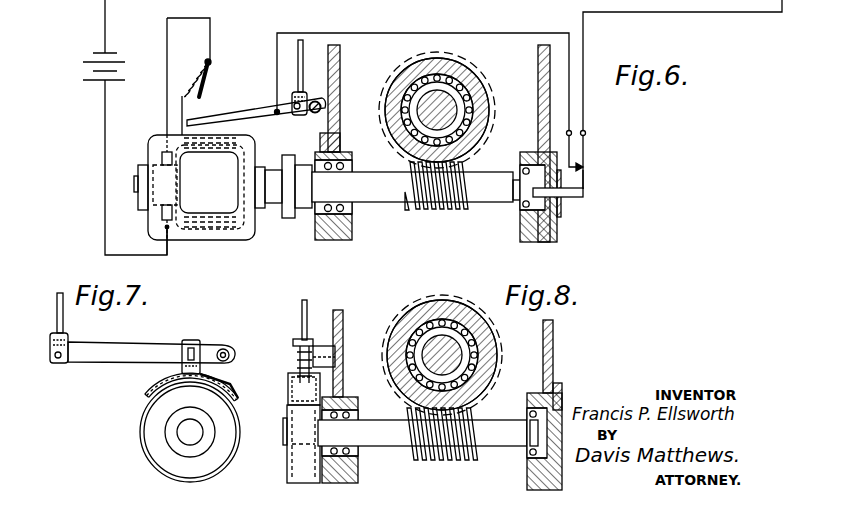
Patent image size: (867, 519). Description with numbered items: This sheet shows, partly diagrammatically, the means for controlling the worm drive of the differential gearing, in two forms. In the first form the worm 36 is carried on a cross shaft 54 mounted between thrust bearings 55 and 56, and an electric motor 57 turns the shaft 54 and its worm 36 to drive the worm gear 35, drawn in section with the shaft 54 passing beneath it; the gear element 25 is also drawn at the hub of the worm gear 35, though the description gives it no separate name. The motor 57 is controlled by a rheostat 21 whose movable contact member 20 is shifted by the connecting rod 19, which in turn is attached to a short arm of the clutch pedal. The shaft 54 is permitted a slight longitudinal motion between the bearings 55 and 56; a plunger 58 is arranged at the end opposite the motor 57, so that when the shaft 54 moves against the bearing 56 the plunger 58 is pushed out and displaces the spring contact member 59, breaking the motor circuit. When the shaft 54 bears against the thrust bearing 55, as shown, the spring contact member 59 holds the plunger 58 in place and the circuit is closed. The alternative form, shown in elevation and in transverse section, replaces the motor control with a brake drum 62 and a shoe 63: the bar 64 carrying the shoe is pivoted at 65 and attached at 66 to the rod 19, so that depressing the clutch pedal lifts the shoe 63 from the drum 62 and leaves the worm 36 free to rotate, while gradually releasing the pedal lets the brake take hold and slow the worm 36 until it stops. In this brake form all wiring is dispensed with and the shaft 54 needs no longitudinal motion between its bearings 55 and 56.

In FIG. 6, the connecting rod 19 is at (300, 90).
In FIG. 7, the connecting rod 19 is at (57, 300).
In FIG. 8, the connecting rod 19 is at (308, 312).
In FIG. 6, the movable contact member 20 is at (250, 112).
In FIG. 6, the rheostat 21 is at (199, 68).
In FIG. 6, the worm gear 25 is at (456, 110).
In FIG. 8, the worm gear 25 is at (432, 345).
In FIG. 6, the worm gear 35 is at (412, 163).
In FIG. 8, the worm gear 35 is at (494, 390).
In FIG. 6, the worm 36 is at (440, 211).
In FIG. 8, the worm 36 is at (452, 458).
In FIG. 6, the cross shaft 54 is at (422, 187).
In FIG. 8, the cross shaft 54 is at (422, 434).
In FIG. 6, the thrust bearing 55 is at (337, 210).
In FIG. 8, the thrust bearing 55 is at (357, 416).
In FIG. 8, the thrust bearing 56 is at (528, 421).
In FIG. 6, the electric motor 57 is at (199, 195).
In FIG. 6, the plunger 58 is at (580, 197).
In FIG. 6, the spring contact member 59 is at (586, 176).
In FIG. 7, the brake drum 62 is at (146, 455).
In FIG. 8, the brake drum 62 is at (290, 468).
In FIG. 7, the shoe 63 is at (150, 400).
In FIG. 8, the shoe 63 is at (294, 398).
In FIG. 7, the bar 64 is at (124, 338).
In FIG. 8, the bar 64 is at (296, 340).
In FIG. 7, the pivot 65 is at (231, 354).
In FIG. 8, the pivot 65 is at (298, 362).
In FIG. 6, the attachment point 66 is at (538, 206).
In FIG. 7, the attachment point 66 is at (58, 364).